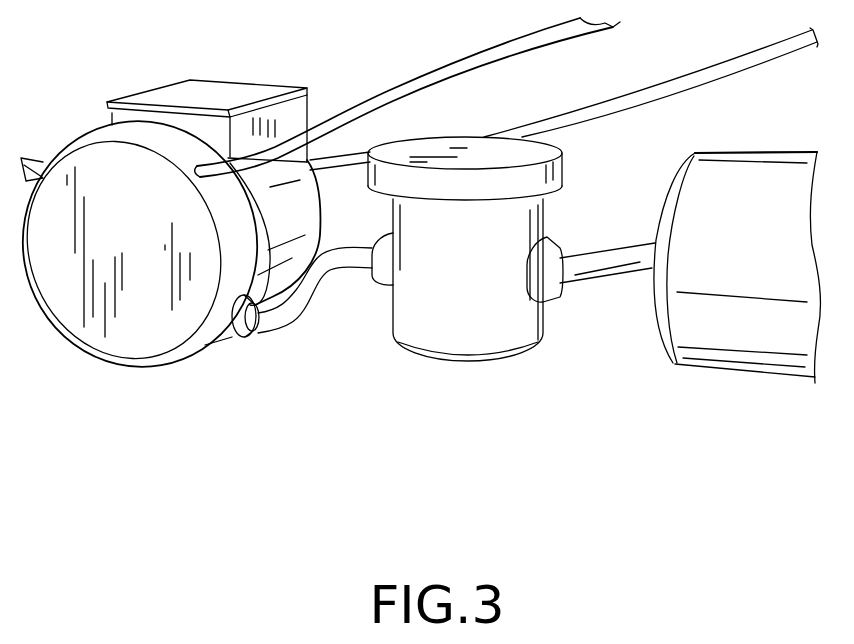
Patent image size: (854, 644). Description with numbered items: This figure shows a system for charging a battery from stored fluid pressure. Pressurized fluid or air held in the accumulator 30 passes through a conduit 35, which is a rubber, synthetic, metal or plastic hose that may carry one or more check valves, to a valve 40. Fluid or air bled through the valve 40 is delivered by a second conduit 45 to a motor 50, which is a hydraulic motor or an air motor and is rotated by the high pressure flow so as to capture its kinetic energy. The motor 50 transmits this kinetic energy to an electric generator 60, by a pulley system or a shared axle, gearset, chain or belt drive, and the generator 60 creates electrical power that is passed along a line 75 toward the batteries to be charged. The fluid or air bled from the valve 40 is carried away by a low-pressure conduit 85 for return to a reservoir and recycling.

The accumulator 30 is at (750, 157).
The conduit 35 is at (603, 282).
The valve 40 is at (472, 352).
The conduit 45 is at (288, 327).
The motor 50 is at (172, 333).
The electric generator 60 is at (233, 90).
The line 75 is at (777, 50).
The conduit 85 is at (535, 35).